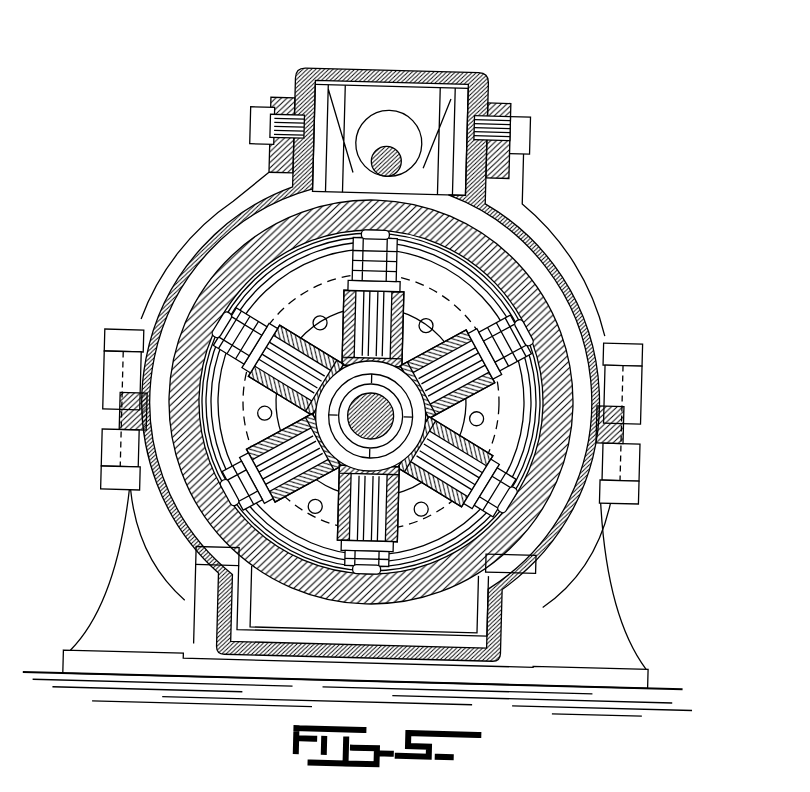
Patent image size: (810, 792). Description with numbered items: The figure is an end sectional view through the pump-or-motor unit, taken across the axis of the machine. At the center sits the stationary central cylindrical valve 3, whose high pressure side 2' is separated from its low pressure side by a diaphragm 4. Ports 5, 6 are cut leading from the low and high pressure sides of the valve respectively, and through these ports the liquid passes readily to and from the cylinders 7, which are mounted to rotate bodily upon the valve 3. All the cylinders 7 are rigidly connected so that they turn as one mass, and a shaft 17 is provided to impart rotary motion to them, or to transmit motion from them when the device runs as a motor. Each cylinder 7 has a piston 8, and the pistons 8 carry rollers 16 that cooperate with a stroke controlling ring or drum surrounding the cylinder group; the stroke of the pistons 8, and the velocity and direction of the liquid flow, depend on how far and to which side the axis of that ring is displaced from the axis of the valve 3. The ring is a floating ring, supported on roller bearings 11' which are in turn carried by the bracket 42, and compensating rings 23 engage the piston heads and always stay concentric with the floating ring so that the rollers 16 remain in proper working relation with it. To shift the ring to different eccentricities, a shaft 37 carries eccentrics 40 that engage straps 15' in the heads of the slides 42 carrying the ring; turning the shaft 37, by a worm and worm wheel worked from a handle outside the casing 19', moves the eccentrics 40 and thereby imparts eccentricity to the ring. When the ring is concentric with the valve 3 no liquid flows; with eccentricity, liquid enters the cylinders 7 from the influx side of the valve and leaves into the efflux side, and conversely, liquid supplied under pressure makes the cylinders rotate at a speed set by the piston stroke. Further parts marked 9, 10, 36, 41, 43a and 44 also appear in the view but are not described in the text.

The straps 15' is at (391, 105).
The valve guide 41 is at (390, 140).
The eccentrics 40 is at (395, 127).
The shaft 37 is at (379, 150).
The stator ring 9 is at (450, 205).
The bracket 42 is at (218, 236).
The cylinders 7 is at (487, 287).
The casing 19' is at (417, 379).
The compensating rings 23 is at (311, 530).
The bolt 44 is at (385, 308).
The roller bearings 11' is at (372, 369).
The piston 10 is at (386, 298).
The pistons 8 is at (371, 402).
The shaft 17 is at (430, 418).
The port 5 is at (462, 472).
The rollers 16 is at (527, 517).
The ring 36 is at (371, 402).
The bracket 43a is at (365, 599).
The port 6 is at (250, 415).
The high pressure side 2' is at (365, 416).
The central cylindrical valve 3 is at (370, 413).
The diaphragm 4 is at (371, 416).